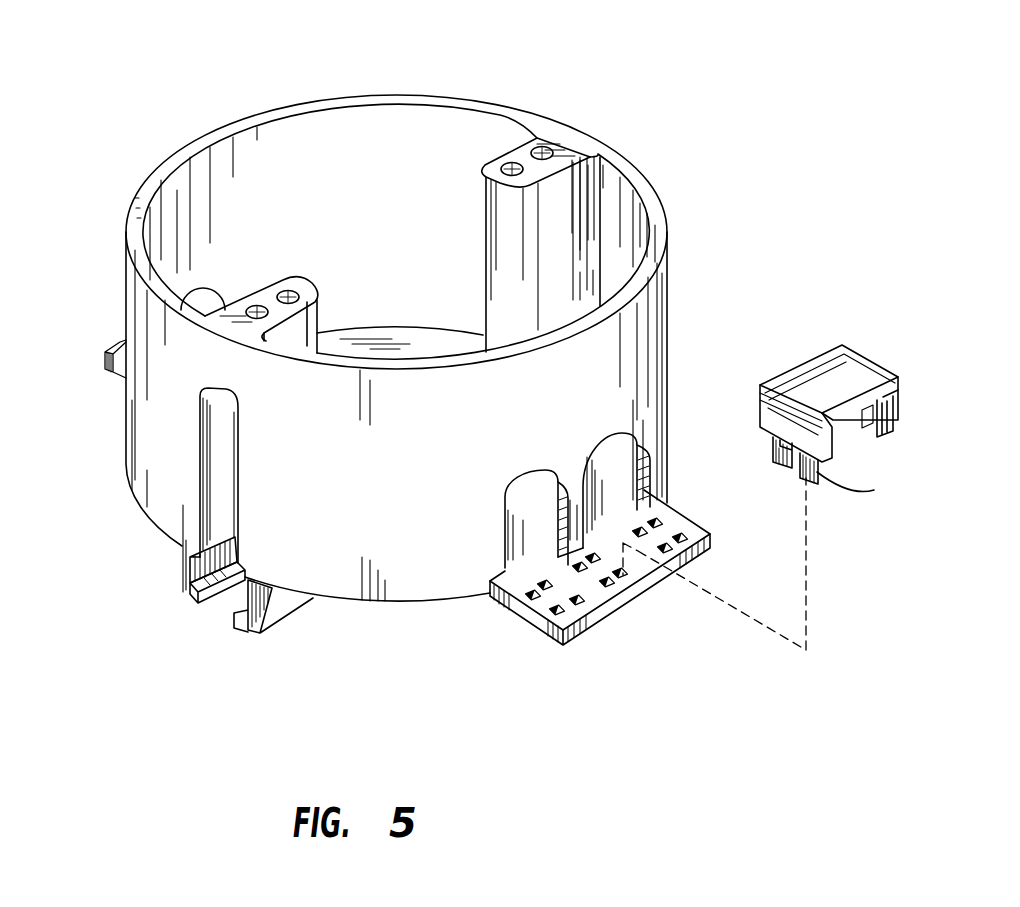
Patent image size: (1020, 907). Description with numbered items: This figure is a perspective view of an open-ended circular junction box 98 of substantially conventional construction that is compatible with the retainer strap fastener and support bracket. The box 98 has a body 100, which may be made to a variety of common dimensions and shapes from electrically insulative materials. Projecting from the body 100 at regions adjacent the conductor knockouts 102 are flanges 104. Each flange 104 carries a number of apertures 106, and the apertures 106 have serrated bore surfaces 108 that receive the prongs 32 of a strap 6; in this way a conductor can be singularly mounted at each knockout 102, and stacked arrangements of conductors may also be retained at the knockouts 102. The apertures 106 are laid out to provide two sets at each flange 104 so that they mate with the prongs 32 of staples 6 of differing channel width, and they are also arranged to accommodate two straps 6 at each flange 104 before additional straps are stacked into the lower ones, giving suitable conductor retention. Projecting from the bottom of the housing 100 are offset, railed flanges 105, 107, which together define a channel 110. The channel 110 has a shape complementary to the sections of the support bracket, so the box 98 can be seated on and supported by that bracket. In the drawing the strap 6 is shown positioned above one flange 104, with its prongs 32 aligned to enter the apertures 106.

The circular junction box 98 is at (196, 70).
The body 100 is at (588, 139).
The conductor knockouts 102 is at (618, 434).
The flanges 104 is at (105, 362).
The railed flange 105 is at (260, 630).
The apertures 106 is at (636, 582).
The railed flange 107 is at (185, 597).
The serrated bore surfaces 108 is at (703, 534).
The channel 110 is at (226, 600).
The strap 6 is at (818, 354).
The prongs 32 is at (882, 442).